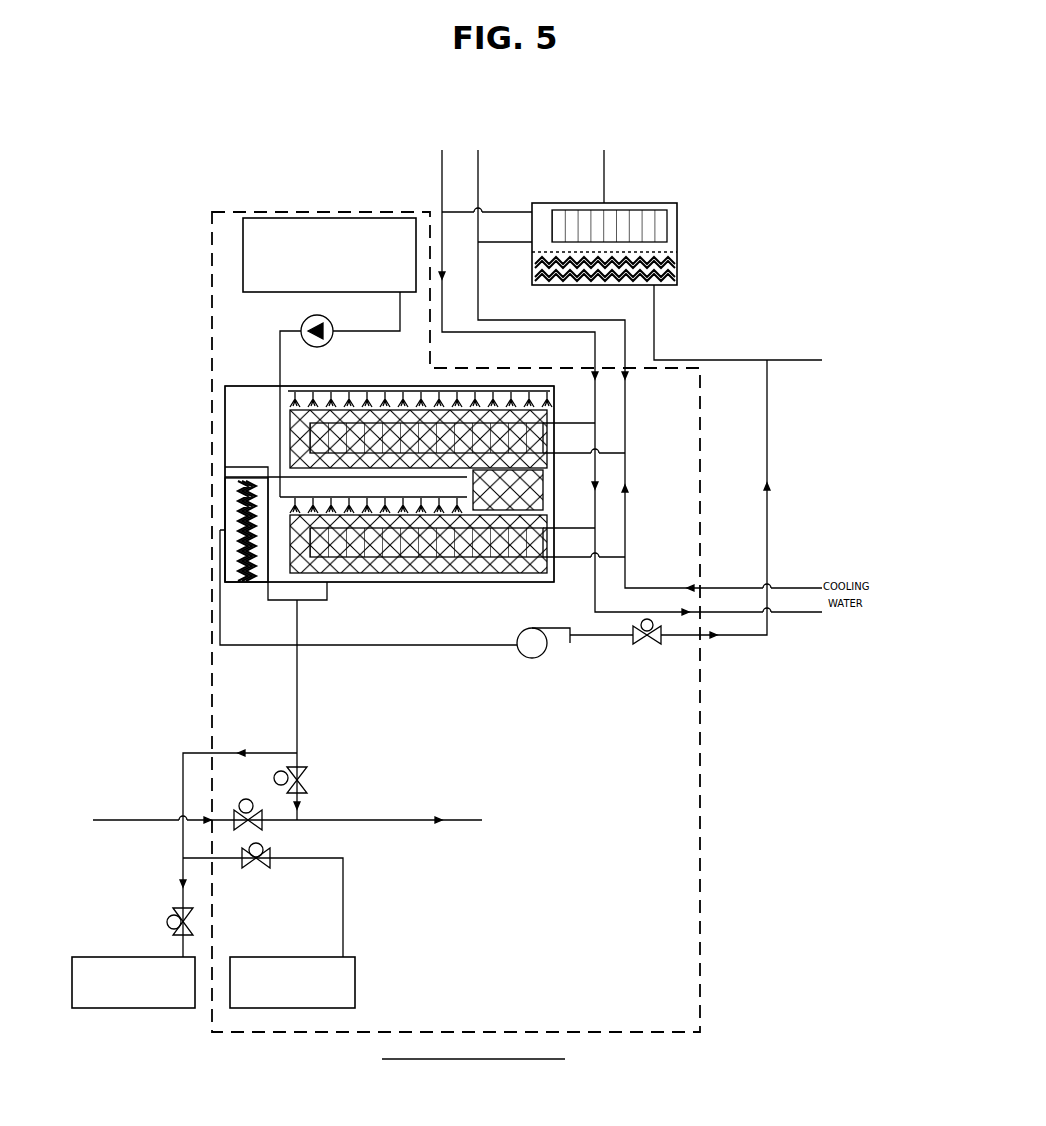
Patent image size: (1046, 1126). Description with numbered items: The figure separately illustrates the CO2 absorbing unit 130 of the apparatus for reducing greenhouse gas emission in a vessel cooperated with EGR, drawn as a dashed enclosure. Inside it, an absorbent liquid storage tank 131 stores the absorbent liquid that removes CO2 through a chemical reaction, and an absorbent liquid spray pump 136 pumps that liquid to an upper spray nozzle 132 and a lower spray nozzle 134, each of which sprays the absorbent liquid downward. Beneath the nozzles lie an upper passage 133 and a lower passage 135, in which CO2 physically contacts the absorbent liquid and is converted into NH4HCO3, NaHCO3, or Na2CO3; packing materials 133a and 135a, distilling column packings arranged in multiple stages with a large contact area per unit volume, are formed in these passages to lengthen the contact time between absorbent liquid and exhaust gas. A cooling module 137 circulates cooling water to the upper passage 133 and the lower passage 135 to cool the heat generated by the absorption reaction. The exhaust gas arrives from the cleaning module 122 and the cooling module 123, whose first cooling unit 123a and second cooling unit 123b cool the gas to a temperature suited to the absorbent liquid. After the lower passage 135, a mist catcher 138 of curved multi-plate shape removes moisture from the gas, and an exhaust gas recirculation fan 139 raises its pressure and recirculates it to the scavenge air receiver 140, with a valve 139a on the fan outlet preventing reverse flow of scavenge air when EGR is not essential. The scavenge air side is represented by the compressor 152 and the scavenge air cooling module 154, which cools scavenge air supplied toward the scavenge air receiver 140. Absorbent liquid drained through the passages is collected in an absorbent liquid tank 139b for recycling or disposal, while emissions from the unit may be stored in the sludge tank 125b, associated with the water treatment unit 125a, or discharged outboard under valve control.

The CO2 absorbing unit 130 is at (456, 636).
The absorbent liquid storage tank 131 is at (329, 255).
The absorbent liquid spray pump 136 is at (311, 394).
The first cooling unit 123a is at (622, 368).
The second cooling unit 123b is at (650, 356).
The scavenge air cooling module 154 is at (658, 244).
The compressor 152 is at (604, 162).
The scavenge air receiver 140 is at (880, 371).
The cleaning module 122 is at (225, 413).
The cooling module 123 is at (225, 413).
The upper spray nozzle 132 is at (420, 388).
The lower spray nozzle 134 is at (373, 494).
The upper passage 133 is at (292, 425).
The packing material 133a is at (292, 448).
The lower passage 135 is at (292, 541).
The lower heat exchange tube bundle 135a is at (292, 557).
The cooling module 137 is at (584, 490).
The mist catcher 138 is at (244, 545).
The exhaust gas recirculation fan 139 is at (575, 659).
The valve 139a is at (691, 518).
The water treatment unit 125a is at (285, 818).
The sludge tank 125b is at (189, 826).
The absorbent liquid tank 139b is at (269, 925).